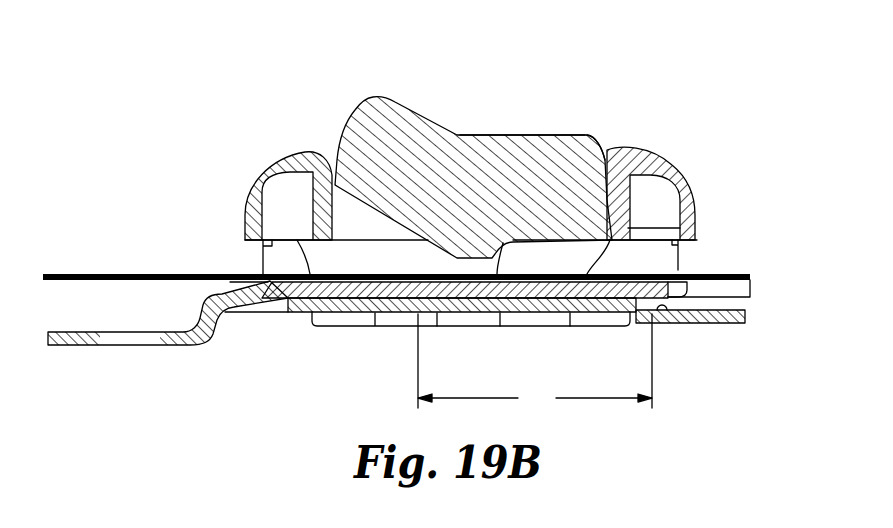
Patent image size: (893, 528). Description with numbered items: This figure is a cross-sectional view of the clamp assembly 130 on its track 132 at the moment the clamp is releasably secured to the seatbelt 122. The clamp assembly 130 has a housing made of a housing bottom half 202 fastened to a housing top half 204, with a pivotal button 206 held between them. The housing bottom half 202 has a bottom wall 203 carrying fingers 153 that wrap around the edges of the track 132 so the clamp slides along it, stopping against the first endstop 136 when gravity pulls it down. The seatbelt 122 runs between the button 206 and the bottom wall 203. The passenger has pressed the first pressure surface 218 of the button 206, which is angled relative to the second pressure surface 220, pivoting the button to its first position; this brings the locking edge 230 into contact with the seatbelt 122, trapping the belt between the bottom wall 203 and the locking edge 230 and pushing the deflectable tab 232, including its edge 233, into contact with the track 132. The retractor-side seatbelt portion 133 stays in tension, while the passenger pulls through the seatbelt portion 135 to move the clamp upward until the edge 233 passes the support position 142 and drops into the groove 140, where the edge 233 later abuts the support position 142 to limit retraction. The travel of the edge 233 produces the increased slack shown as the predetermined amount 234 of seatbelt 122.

The seatbelt 122 is at (680, 228).
The clamp assembly 130 is at (287, 157).
The track 132 is at (221, 316).
The seatbelt portion between retractor and deflectable tab 133 is at (93, 274).
The seatbelt portion between deflectable tab and shoulder portion 135 is at (737, 277).
The first endstop 136 is at (230, 275).
The groove 140 is at (737, 322).
The support position 142 is at (670, 311).
The fingers 153 is at (416, 321).
The housing bottom half 202 is at (655, 270).
The bottom wall 203 is at (262, 229).
The housing top half 204 is at (674, 170).
The button 206 is at (588, 160).
The first pressure surface 218 is at (552, 134).
The second pressure surface 220 is at (410, 111).
The locking edge 230 is at (535, 313).
The deflectable tab 232 is at (447, 313).
The edge 233 is at (345, 314).
The predetermined amount 234 is at (535, 363).